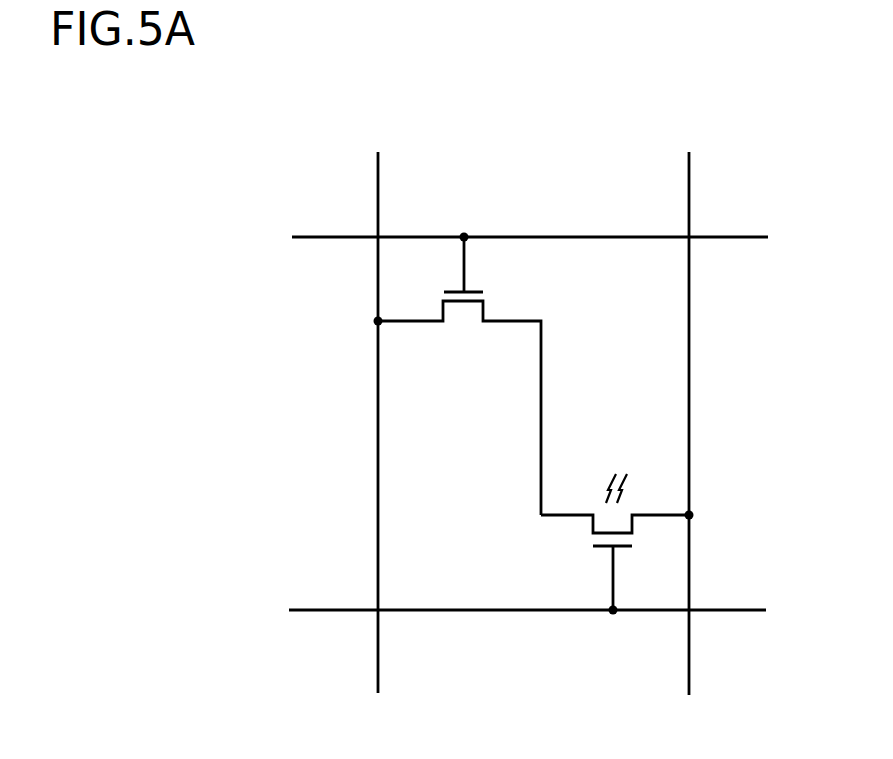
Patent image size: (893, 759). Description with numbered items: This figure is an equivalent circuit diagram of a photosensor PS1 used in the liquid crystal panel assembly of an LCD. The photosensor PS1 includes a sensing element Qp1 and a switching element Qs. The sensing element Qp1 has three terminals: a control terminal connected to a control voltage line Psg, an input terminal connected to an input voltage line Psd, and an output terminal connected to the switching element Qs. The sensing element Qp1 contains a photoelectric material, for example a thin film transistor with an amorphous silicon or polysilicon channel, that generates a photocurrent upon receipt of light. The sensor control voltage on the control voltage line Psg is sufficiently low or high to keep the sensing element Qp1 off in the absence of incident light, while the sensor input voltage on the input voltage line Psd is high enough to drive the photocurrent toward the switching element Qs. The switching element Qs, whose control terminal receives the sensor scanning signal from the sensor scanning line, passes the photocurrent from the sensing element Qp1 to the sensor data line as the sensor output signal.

The photosensor PS1 is at (540, 88).
The input voltage line Psd is at (691, 409).
The control voltage line Psg is at (501, 605).
The switching element Qs is at (458, 374).
The sensing element Qp1 is at (617, 544).